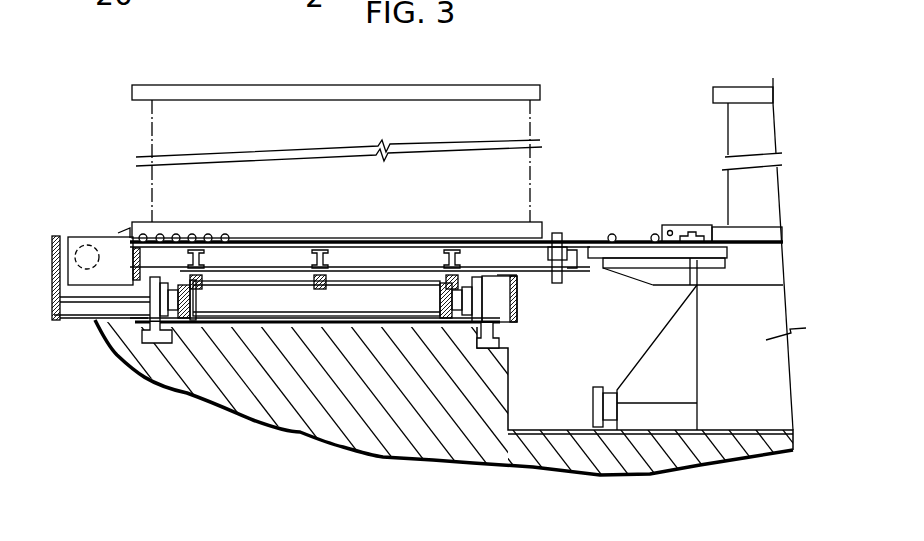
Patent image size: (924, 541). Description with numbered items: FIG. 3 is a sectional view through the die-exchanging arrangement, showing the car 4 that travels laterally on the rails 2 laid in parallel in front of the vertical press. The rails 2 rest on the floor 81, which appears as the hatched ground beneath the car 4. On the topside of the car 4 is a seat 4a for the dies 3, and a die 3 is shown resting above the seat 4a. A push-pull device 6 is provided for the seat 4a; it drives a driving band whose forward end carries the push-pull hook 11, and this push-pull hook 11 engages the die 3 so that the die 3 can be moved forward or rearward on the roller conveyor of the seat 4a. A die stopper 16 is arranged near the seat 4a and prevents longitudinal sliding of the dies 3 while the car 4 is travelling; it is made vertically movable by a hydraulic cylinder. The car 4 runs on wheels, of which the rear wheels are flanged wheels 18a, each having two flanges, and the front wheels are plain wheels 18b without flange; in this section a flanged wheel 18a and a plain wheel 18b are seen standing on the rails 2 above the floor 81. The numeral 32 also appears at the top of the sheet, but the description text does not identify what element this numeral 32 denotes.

The base 2 is at (490, 334).
The frame 3 is at (421, 84).
The table 4 is at (388, 241).
The table upper surface 4a is at (296, 240).
The drive unit 6 is at (110, 232).
The stopper member 11 is at (692, 230).
The positioning pin 16 is at (558, 236).
The support leg 18a is at (467, 330).
The support leg 18b is at (125, 345).
The cylinder rod 81 is at (120, 325).
The guide 32 is at (235, 0).